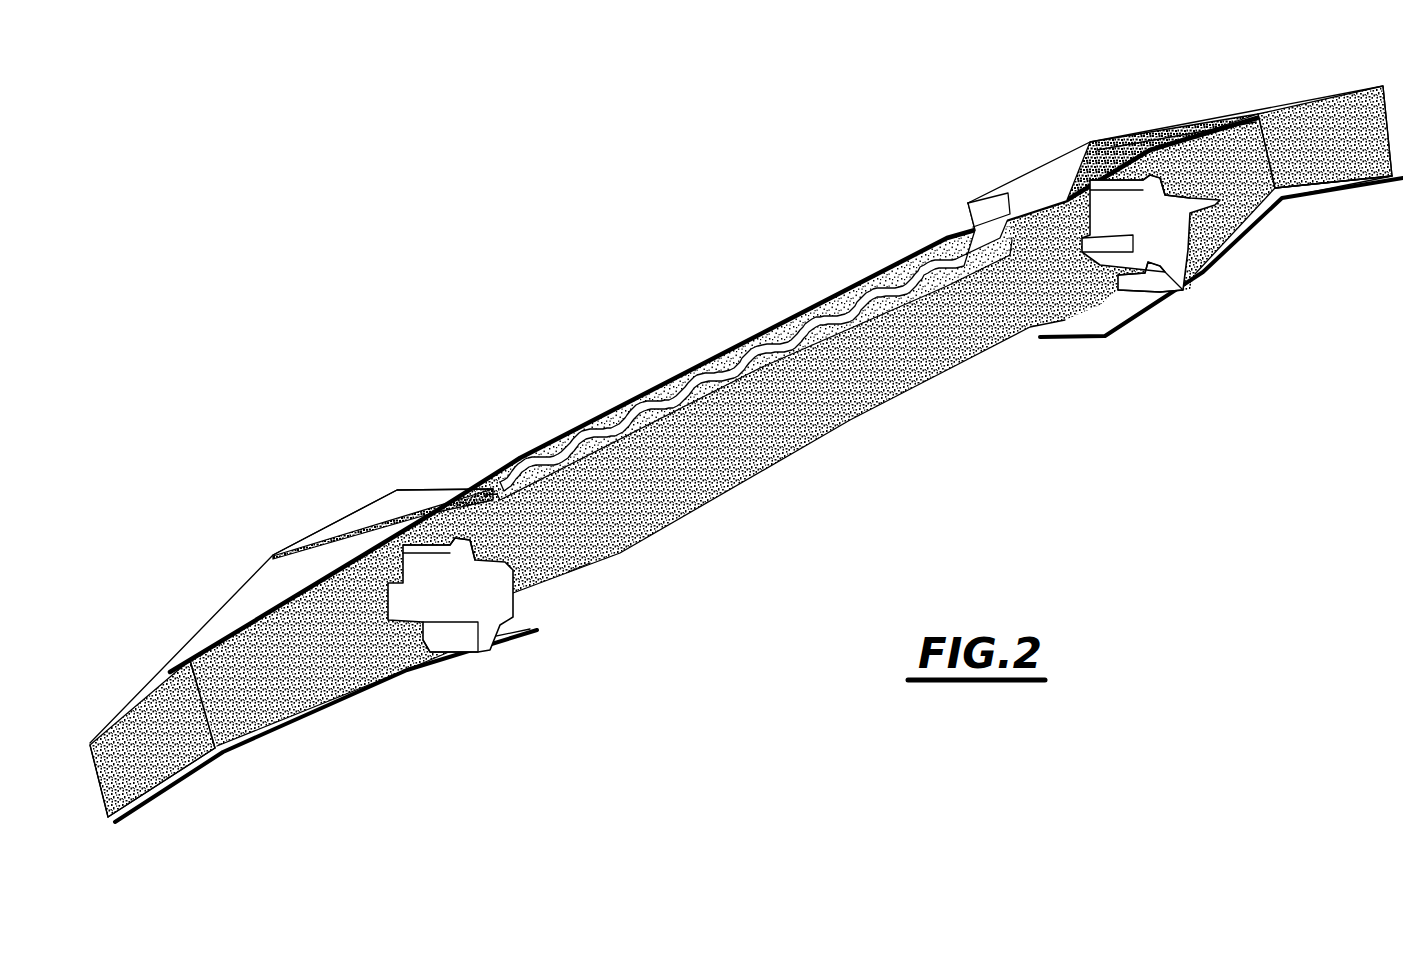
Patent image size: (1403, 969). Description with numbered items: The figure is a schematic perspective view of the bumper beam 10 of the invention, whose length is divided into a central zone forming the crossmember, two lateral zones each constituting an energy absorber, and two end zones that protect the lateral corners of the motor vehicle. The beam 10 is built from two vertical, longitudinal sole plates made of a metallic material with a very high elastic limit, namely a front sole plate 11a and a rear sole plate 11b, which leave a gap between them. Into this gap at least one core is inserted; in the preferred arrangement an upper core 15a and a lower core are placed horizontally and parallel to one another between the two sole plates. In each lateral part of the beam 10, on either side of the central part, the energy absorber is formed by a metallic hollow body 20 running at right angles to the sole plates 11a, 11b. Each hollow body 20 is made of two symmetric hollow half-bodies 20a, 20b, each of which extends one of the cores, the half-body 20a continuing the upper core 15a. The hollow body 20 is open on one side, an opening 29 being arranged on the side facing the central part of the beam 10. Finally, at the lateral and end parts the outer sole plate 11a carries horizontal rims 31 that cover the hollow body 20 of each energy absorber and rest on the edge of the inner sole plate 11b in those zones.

The beam 10 is at (759, 235).
The front sole plate 11a is at (597, 410).
The rear sole plate 11b is at (757, 423).
The upper core 15a is at (705, 387).
The hollow body 20 is at (525, 619).
The hollow half-body 20a is at (448, 540).
The hollow half-body 20b is at (462, 633).
The opening 29 is at (568, 572).
The horizontal rims 31 is at (337, 520).